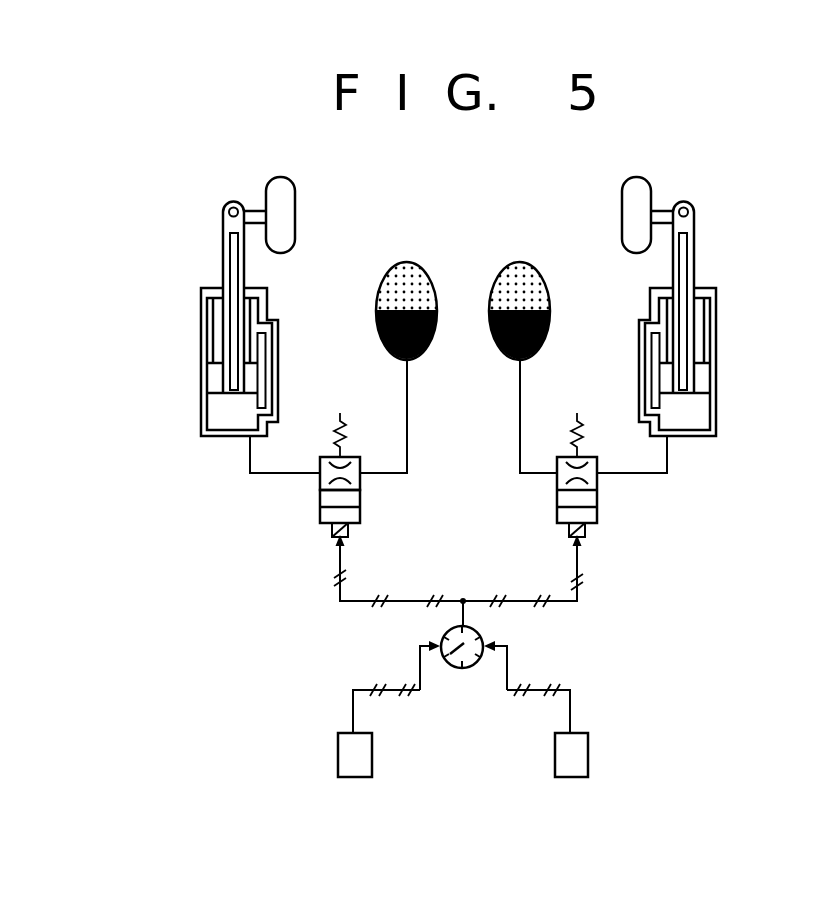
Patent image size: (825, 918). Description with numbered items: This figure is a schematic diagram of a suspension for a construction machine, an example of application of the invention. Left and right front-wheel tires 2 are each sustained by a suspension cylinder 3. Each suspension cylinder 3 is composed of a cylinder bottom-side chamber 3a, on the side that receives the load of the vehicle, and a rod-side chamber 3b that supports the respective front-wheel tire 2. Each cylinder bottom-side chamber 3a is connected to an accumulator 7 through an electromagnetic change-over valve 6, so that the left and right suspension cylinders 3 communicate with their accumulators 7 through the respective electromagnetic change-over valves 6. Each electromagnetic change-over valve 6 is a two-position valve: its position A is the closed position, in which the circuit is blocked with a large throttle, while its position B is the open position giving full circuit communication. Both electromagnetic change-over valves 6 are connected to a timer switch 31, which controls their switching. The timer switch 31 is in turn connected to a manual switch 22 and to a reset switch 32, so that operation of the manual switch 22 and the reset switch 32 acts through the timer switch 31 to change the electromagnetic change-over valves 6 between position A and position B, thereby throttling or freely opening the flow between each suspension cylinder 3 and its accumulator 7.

The front-wheel tire 2 is at (283, 187).
The suspension cylinder 3 is at (434, 339).
The cylinder bottom-side chamber 3a is at (227, 418).
The rod-side chamber 3b is at (216, 317).
The electromagnetic change-over valve 6 is at (330, 528).
The accumulator 7 is at (409, 262).
The manual switch 22 is at (345, 732).
The timer switch 31 is at (483, 637).
The reset switch 32 is at (577, 732).
The position A is at (360, 463).
The position B is at (360, 515).